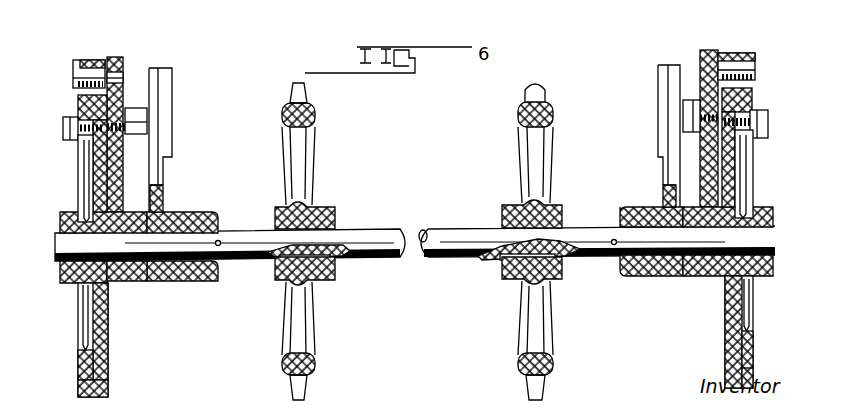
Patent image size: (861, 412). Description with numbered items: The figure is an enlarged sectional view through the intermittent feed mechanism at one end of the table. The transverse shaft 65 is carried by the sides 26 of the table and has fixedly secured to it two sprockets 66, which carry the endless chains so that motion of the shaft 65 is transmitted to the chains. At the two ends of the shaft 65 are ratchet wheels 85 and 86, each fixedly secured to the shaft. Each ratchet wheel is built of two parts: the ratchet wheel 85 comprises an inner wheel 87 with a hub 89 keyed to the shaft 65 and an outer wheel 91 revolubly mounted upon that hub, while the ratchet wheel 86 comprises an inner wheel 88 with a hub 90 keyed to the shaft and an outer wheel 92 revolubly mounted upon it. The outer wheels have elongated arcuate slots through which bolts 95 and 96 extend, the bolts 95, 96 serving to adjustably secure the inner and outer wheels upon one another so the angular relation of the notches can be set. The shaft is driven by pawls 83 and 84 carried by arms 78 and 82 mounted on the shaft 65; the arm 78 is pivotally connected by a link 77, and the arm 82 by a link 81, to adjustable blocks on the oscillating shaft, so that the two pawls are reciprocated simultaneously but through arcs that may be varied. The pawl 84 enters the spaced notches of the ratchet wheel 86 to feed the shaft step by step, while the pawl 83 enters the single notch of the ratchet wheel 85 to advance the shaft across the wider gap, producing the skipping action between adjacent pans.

The sides of the table 26 is at (153, 72).
The shaft 65 is at (447, 231).
The sprockets 66 is at (305, 149).
The link 77 is at (128, 108).
The arm 78 is at (114, 58).
The link 81 is at (694, 101).
The arm 82 is at (710, 50).
The pawl 83 is at (88, 62).
The pawl 84 is at (737, 56).
The ratchet wheel 85 is at (78, 100).
The ratchet wheel 86 is at (751, 98).
The inner wheel 87 is at (91, 162).
The inner wheel 88 is at (733, 147).
The hub 89 is at (62, 272).
The hub 90 is at (770, 260).
The outer wheel 91 is at (82, 198).
The outer wheel 92 is at (746, 183).
The bolt 95 is at (66, 136).
The bolt 96 is at (760, 122).